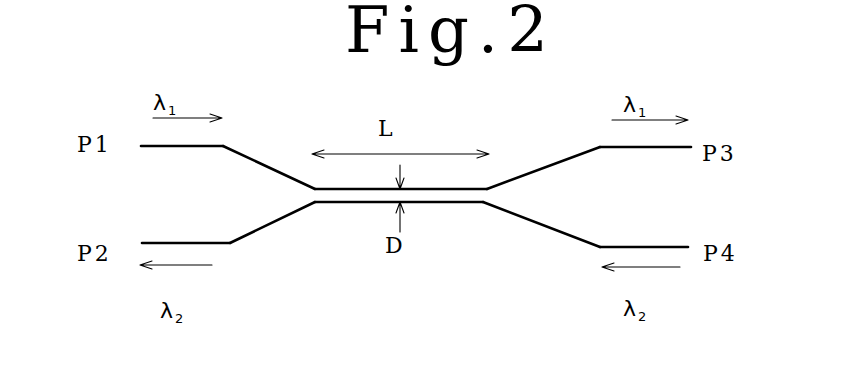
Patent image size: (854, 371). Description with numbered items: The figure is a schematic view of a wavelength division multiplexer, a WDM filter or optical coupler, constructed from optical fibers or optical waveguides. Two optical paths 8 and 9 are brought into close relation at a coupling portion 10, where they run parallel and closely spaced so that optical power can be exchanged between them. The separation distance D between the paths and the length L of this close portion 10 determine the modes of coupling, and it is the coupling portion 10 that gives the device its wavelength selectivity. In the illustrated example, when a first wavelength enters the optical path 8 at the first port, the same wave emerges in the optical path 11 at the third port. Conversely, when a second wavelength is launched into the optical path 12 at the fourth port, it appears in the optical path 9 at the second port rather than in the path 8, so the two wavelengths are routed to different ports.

The optical path 8 is at (272, 168).
The optical path 9 is at (273, 223).
The coupling portion 10 is at (462, 197).
The optical path 11 is at (587, 150).
The optical path 12 is at (568, 235).